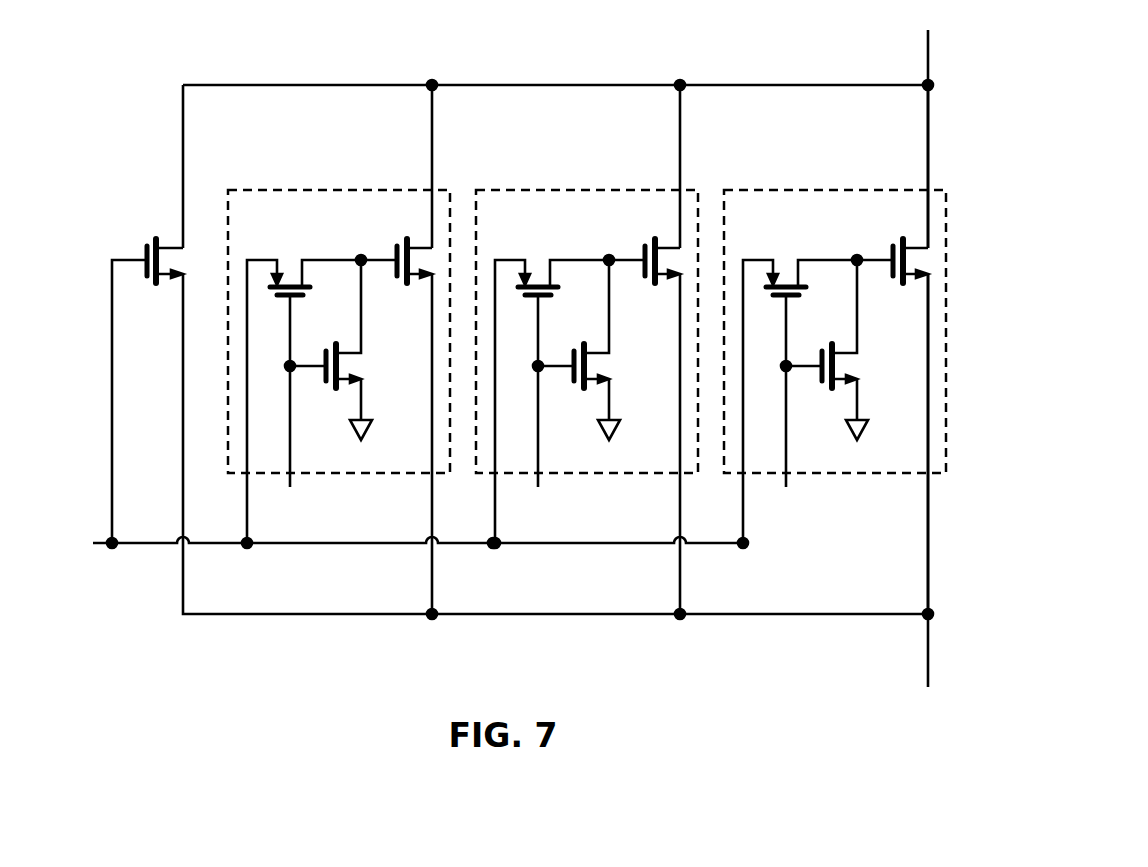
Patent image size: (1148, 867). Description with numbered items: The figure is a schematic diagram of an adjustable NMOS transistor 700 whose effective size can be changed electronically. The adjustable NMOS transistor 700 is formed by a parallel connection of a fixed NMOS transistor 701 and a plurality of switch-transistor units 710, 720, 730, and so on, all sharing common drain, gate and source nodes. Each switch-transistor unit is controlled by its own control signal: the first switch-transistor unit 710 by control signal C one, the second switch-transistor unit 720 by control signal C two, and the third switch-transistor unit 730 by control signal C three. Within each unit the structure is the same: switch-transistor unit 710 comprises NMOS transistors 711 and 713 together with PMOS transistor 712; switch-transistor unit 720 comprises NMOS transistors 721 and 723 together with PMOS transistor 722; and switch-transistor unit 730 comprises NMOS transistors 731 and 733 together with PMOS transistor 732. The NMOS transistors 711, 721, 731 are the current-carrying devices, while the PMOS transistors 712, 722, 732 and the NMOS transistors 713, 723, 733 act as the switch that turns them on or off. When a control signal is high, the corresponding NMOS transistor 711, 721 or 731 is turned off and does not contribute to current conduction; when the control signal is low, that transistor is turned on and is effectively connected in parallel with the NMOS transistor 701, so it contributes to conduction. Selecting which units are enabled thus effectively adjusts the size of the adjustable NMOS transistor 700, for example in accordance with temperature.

The adjustable NMOS transistor 700 is at (214, 676).
The NMOS transistor 701 is at (152, 238).
The switch-transistor unit 710 is at (333, 185).
The NMOS transistor 711 is at (397, 238).
The PMOS transistor 712 is at (311, 289).
The NMOS transistor 713 is at (334, 390).
The switch-transistor unit 720 is at (587, 349).
The NMOS transistor 721 is at (652, 240).
The PMOS transistor 722 is at (555, 306).
The NMOS transistor 723 is at (579, 350).
The switch-transistor unit 730 is at (835, 349).
The NMOS transistor 731 is at (900, 240).
The PMOS transistor 732 is at (803, 306).
The NMOS transistor 733 is at (827, 350).